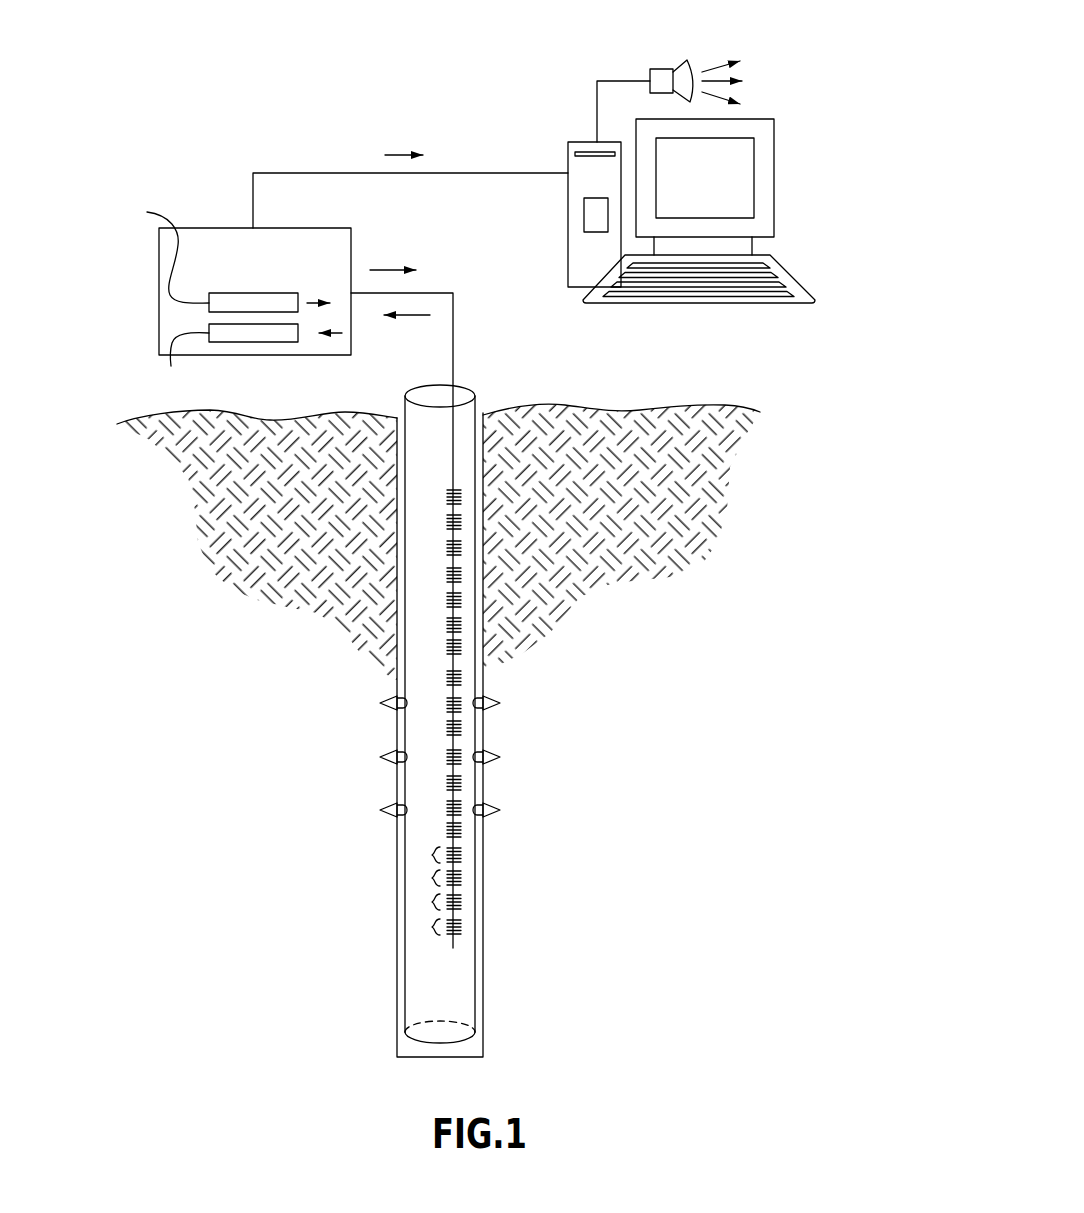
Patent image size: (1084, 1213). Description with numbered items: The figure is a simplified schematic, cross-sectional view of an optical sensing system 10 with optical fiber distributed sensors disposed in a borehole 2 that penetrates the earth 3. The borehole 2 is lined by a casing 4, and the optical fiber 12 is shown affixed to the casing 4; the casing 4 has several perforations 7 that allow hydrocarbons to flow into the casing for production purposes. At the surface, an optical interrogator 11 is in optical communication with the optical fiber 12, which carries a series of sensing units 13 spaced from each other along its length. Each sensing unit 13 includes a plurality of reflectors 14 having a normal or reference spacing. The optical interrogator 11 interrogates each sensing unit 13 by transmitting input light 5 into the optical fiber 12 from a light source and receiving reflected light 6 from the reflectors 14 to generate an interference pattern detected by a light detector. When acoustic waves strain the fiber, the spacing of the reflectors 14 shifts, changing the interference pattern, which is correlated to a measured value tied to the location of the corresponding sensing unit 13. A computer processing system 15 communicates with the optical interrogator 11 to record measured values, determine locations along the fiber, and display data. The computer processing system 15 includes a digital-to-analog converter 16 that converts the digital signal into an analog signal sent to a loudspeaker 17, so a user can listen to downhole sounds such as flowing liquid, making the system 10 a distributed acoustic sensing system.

The optical sensing system 10 is at (226, 72).
The optical interrogator 11 is at (316, 228).
The computer processing system 15 is at (568, 153).
The digital-to-analog converter 16 is at (593, 215).
The loudspeaker 17 is at (650, 75).
The input light 5 is at (382, 271).
The reflected light 6 is at (400, 315).
The earth 3 is at (285, 537).
The borehole 2 is at (483, 465).
The casing 4 is at (479, 399).
The optical fiber 12 is at (454, 343).
The perforations 7 is at (500, 810).
The reflectors 14 is at (467, 933).
The sensing units 13 is at (430, 855).